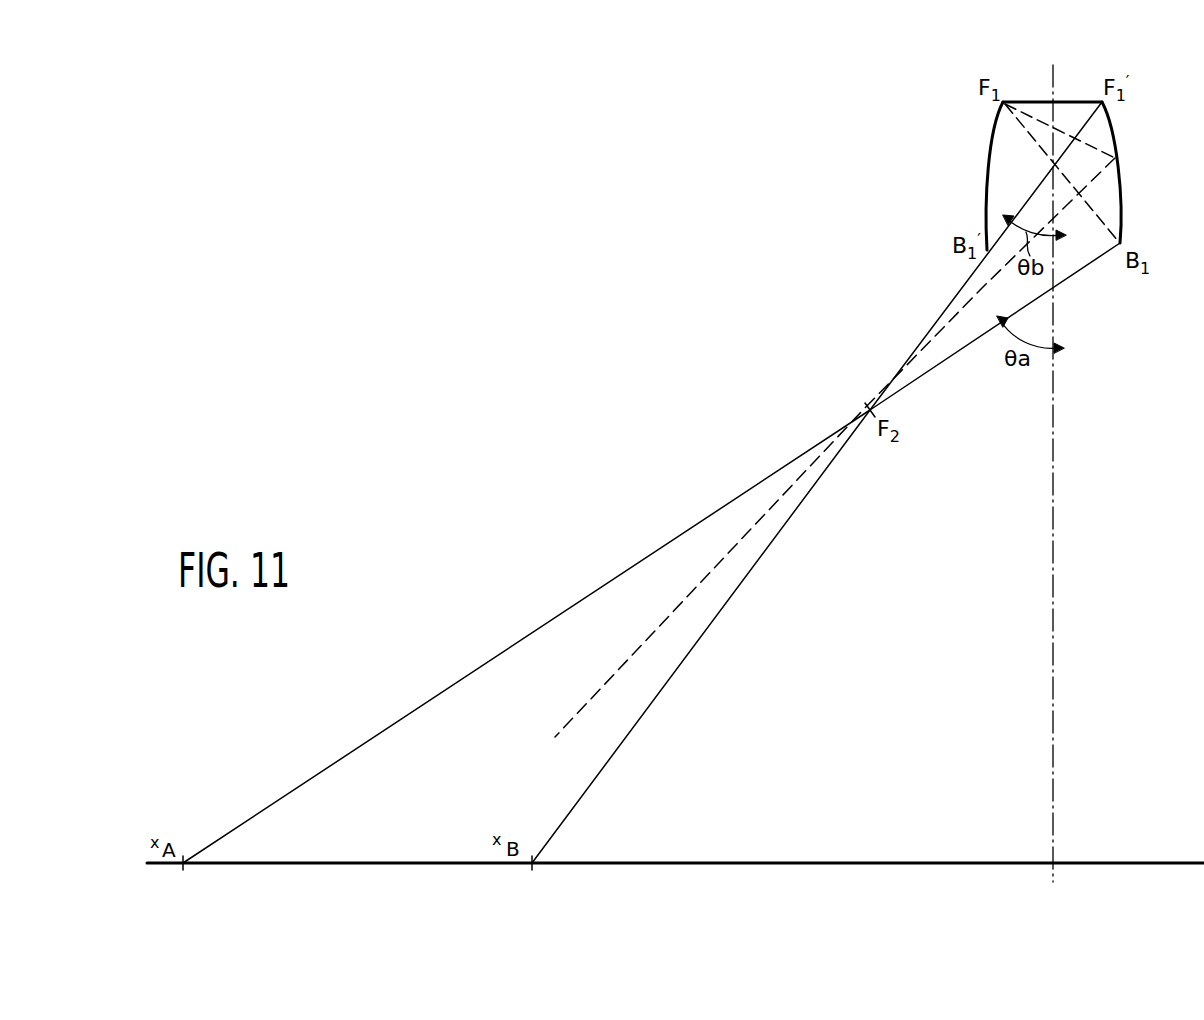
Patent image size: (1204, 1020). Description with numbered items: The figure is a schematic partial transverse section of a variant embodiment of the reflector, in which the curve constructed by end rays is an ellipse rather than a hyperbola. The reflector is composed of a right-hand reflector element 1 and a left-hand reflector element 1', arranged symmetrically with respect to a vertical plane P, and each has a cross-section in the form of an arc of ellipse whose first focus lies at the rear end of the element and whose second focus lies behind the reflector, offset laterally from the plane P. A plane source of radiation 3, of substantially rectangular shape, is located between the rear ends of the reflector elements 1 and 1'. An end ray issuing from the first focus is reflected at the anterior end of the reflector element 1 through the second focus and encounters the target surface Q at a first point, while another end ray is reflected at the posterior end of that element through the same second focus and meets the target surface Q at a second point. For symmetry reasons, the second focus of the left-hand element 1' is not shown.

The right-hand reflector element 1 is at (1131, 172).
The left-hand reflector element 1' is at (965, 176).
The plane source of radiation 3 is at (1034, 101).
The vertical plane P is at (1055, 556).
The target surface Q is at (798, 861).